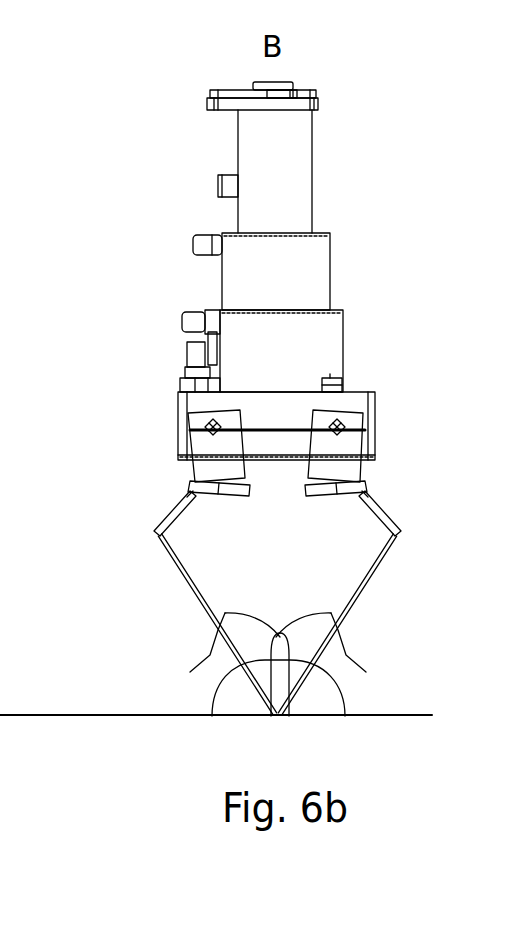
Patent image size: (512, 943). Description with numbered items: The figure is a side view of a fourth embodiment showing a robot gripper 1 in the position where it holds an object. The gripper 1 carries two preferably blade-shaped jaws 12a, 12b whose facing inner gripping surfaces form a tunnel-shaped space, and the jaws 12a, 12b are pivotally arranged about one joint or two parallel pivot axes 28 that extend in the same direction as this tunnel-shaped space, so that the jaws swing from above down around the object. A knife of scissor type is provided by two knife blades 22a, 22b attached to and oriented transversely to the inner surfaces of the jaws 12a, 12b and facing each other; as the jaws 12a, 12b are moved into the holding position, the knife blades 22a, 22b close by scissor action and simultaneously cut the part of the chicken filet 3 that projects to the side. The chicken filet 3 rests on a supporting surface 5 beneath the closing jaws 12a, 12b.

The robot gripper 1 is at (158, 191).
The pivot axis 28 is at (193, 412).
The jaw 12b is at (168, 560).
The jaw 12a is at (395, 550).
The knife blade 22b is at (253, 638).
The knife blade 22a is at (308, 638).
The chicken filet 3 is at (315, 697).
The ground surface 5 is at (52, 714).